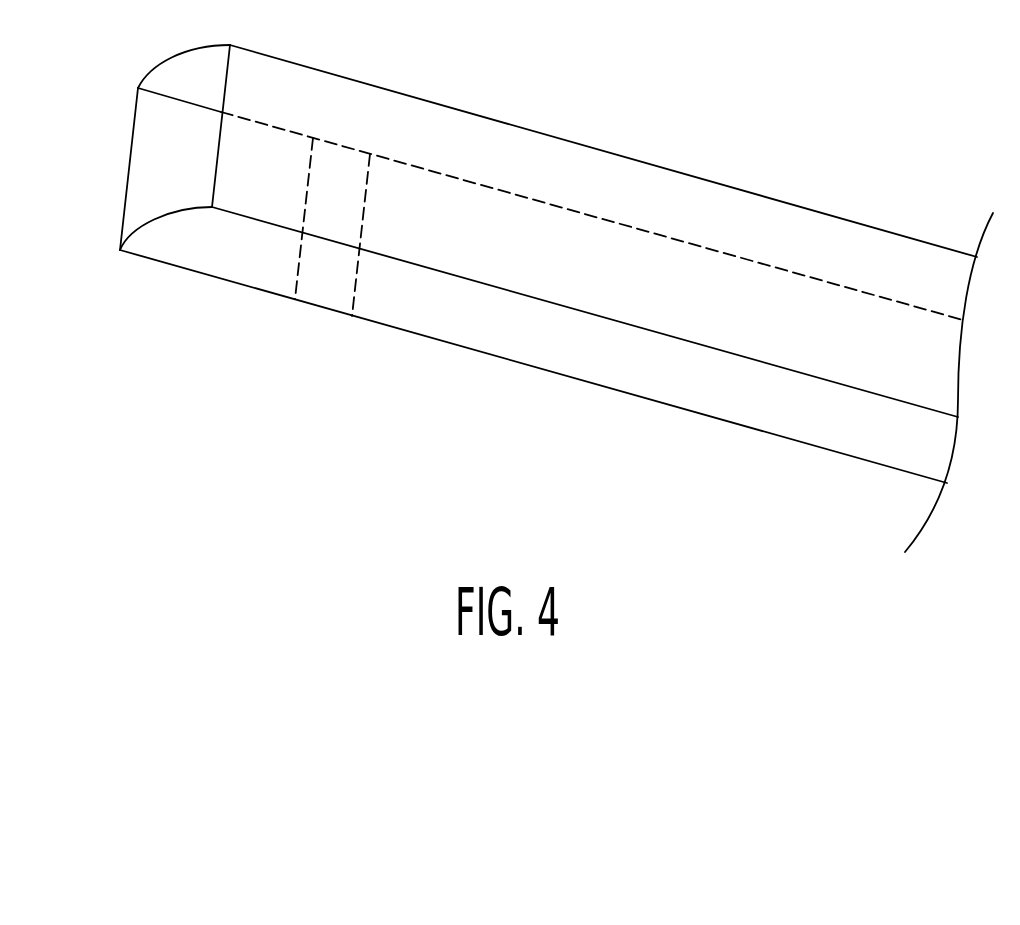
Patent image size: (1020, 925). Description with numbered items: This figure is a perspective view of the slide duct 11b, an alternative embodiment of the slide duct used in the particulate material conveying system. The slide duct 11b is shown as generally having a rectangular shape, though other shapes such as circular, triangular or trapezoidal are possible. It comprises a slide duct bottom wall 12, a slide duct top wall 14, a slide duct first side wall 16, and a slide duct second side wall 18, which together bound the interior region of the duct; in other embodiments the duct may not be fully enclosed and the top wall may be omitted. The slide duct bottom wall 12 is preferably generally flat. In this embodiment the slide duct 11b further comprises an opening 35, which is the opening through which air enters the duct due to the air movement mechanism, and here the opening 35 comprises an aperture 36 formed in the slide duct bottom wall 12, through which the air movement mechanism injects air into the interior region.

The slide duct 11b is at (725, 185).
The slide duct bottom wall 12 is at (148, 195).
The slide duct top wall 14 is at (673, 312).
The slide duct first side wall 16 is at (512, 168).
The slide duct second side wall 18 is at (505, 338).
The opening 35 is at (345, 213).
The aperture 36 is at (357, 277).